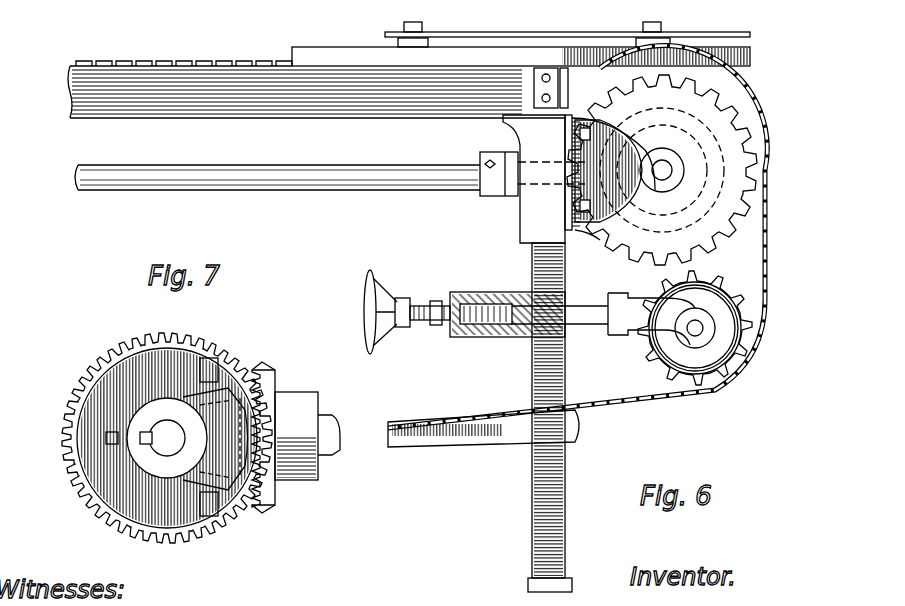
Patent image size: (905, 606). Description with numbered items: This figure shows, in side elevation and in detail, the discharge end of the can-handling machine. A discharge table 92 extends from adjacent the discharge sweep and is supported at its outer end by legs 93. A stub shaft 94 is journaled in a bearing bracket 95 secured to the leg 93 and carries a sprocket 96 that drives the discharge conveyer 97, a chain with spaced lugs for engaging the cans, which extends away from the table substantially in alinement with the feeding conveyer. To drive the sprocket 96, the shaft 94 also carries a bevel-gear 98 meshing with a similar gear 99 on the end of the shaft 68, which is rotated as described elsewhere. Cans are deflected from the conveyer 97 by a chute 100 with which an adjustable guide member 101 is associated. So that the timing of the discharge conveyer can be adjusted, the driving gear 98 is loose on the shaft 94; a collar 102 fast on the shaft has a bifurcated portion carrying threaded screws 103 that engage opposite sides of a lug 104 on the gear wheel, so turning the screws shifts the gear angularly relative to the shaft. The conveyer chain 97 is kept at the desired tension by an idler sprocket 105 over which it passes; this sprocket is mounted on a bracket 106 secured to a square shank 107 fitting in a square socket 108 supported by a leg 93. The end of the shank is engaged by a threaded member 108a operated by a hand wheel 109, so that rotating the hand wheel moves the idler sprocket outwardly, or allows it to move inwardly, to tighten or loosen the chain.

In FIG. 6, the shaft 68 is at (322, 192).
In FIG. 7, the shaft 68 is at (335, 455).
In FIG. 6, the discharge table 92 is at (147, 63).
In FIG. 6, the legs 93 is at (566, 468).
In FIG. 6, the stub shaft 94 is at (665, 170).
In FIG. 7, the stub shaft 94 is at (165, 458).
In FIG. 6, the bearing bracket 95 is at (580, 235).
In FIG. 6, the sprocket 96 is at (635, 258).
In FIG. 6, the discharge conveyer 97 is at (758, 245).
In FIG. 6, the bevel-gear 98 is at (742, 118).
In FIG. 7, the bevel-gear 98 is at (72, 486).
In FIG. 6, the gear 99 is at (600, 165).
In FIG. 7, the gear 99 is at (268, 505).
In FIG. 6, the chute 100 is at (343, 50).
In FIG. 6, the adjustable guide member 101 is at (486, 38).
In FIG. 7, the adjustable guide member 101 is at (145, 405).
In FIG. 7, the collar 102 is at (182, 340).
In FIG. 7, the screws 103 is at (215, 365).
In FIG. 7, the lug 104 is at (262, 385).
In FIG. 6, the idler sprocket 105 is at (705, 372).
In FIG. 6, the bracket 106 is at (650, 348).
In FIG. 6, the square shank 107 is at (590, 330).
In FIG. 6, the square socket 108 is at (484, 298).
In FIG. 6, the threaded member 108a is at (428, 322).
In FIG. 6, the hand wheel 109 is at (385, 295).